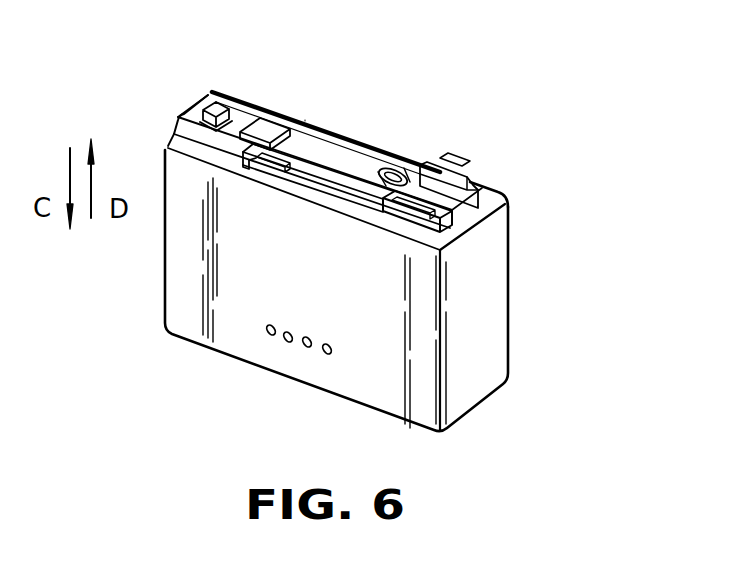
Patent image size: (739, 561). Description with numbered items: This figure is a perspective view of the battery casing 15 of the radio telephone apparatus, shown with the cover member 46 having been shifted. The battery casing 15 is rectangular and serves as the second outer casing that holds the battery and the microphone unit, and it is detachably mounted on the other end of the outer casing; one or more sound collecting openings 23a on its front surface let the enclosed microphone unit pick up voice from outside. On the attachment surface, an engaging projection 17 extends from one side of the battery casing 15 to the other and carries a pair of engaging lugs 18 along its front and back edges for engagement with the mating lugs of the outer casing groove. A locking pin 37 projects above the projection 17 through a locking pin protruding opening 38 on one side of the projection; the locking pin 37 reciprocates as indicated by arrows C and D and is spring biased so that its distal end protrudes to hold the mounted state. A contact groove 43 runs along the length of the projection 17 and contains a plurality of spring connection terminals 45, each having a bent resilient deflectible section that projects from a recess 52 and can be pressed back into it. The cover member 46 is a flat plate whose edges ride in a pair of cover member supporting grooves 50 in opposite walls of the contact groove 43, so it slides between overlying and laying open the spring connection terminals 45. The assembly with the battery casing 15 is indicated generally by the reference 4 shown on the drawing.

The battery pack 4 is at (380, 289).
The battery casing 15 is at (368, 289).
The engaging projection 17 is at (299, 133).
The engaging lugs 18 is at (307, 120).
The sound collecting openings 23a is at (290, 342).
The locking pin 37 is at (209, 99).
The locking pin protruding opening 38 is at (240, 103).
The contact groove 43 is at (452, 227).
The spring connection terminals 45 is at (420, 158).
The cover member 46 is at (352, 158).
The cover member supporting grooves 50 is at (501, 204).
The recess 52 is at (386, 170).